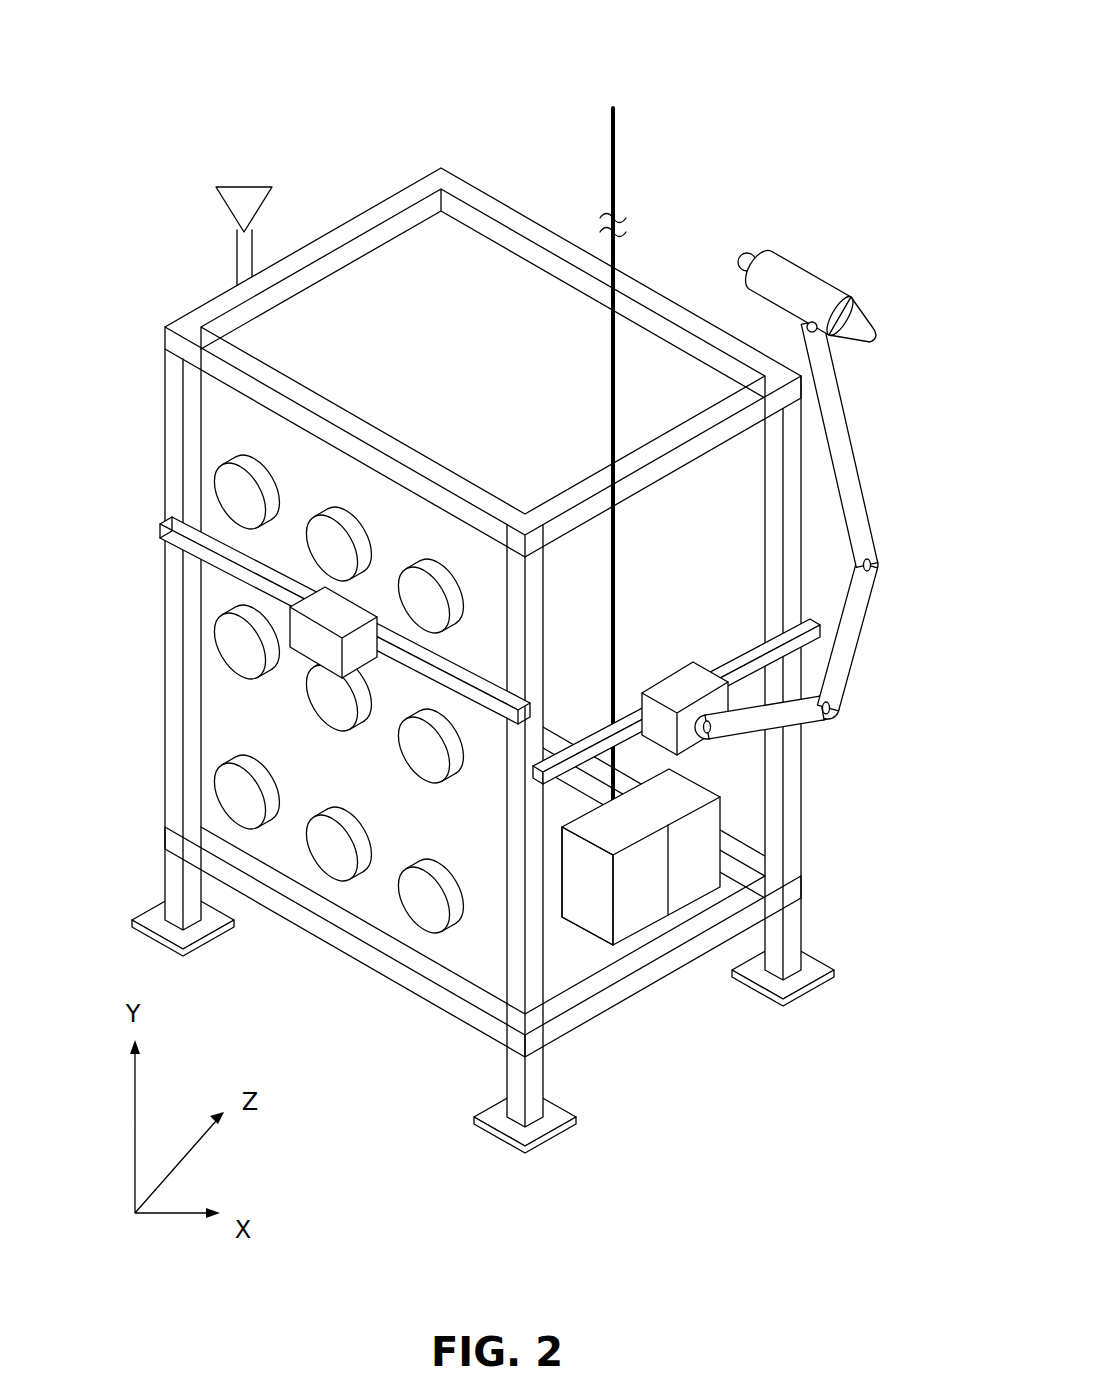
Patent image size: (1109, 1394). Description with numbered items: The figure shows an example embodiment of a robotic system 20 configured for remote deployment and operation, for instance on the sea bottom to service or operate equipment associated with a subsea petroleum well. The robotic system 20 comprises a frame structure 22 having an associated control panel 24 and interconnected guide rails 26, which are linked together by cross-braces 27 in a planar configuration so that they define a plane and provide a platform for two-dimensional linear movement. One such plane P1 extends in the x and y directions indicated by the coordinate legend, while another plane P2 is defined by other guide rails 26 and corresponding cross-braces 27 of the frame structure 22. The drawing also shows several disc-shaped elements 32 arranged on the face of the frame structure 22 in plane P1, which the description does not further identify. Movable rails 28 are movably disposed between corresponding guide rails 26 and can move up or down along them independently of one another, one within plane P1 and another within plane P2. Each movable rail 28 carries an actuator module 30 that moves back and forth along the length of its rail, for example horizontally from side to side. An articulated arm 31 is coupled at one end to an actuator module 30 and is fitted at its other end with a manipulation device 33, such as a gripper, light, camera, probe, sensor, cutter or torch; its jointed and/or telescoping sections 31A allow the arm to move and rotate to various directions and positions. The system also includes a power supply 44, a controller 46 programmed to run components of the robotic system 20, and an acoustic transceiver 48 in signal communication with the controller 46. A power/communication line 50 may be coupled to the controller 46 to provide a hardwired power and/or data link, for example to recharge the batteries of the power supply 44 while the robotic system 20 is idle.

The robotic system 20 is at (290, 72).
The frame structure 22 is at (494, 646).
The control panel 24 is at (228, 418).
The guide rails 26 is at (795, 818).
The cross-braces 27 is at (654, 812).
The movable rails 28 is at (217, 566).
The actuator module 30 is at (305, 638).
The articulated arm 31 is at (836, 553).
The jointed and/or telescoping sections 31A is at (852, 432).
The target discs 32 is at (334, 547).
The manipulation device 33 is at (800, 262).
The power supply 44 is at (641, 857).
The controller 46 is at (624, 894).
The acoustic transceiver 48 is at (225, 201).
The power/communication line 50 is at (618, 141).
The plane P1 is at (271, 693).
The plane P2 is at (578, 960).